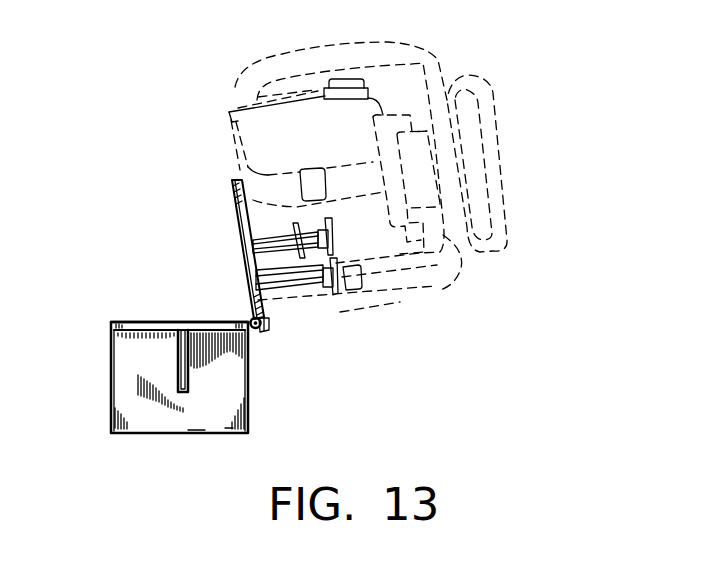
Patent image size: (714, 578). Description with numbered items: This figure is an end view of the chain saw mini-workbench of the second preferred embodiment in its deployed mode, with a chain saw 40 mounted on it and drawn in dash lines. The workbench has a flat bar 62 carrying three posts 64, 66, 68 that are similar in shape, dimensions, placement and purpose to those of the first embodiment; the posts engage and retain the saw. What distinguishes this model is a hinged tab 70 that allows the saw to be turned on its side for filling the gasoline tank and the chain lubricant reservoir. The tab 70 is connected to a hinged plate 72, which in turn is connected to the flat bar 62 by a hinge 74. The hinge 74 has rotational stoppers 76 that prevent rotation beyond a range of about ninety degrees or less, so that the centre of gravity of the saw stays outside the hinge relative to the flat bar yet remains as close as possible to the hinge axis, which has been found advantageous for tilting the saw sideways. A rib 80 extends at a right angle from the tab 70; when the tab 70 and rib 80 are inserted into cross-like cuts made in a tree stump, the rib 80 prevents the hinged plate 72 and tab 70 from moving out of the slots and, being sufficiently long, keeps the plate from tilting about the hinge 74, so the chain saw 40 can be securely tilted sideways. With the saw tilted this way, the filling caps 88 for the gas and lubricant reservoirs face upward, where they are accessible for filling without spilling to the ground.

The chain saw 40 is at (385, 115).
The filling caps 88 is at (325, 80).
The flat bar 62 is at (232, 185).
The post 64 is at (290, 240).
The post 66 is at (338, 295).
The post 68 is at (331, 235).
The hinged tab 70 is at (143, 417).
The hinged plate 72 is at (157, 323).
The hinge 74 is at (252, 338).
The rotational stoppers 76 is at (267, 333).
The rib 80 is at (177, 358).